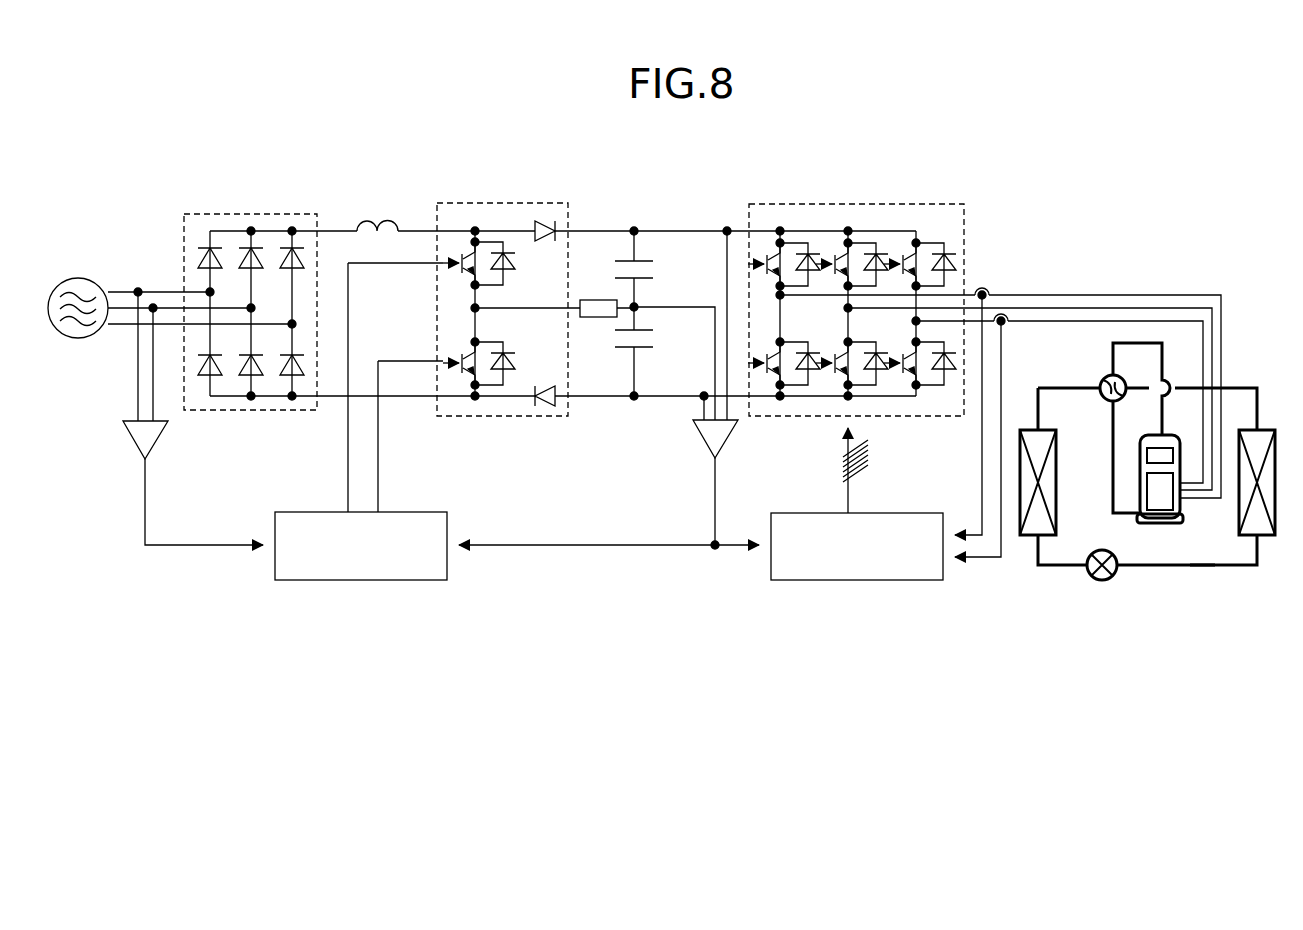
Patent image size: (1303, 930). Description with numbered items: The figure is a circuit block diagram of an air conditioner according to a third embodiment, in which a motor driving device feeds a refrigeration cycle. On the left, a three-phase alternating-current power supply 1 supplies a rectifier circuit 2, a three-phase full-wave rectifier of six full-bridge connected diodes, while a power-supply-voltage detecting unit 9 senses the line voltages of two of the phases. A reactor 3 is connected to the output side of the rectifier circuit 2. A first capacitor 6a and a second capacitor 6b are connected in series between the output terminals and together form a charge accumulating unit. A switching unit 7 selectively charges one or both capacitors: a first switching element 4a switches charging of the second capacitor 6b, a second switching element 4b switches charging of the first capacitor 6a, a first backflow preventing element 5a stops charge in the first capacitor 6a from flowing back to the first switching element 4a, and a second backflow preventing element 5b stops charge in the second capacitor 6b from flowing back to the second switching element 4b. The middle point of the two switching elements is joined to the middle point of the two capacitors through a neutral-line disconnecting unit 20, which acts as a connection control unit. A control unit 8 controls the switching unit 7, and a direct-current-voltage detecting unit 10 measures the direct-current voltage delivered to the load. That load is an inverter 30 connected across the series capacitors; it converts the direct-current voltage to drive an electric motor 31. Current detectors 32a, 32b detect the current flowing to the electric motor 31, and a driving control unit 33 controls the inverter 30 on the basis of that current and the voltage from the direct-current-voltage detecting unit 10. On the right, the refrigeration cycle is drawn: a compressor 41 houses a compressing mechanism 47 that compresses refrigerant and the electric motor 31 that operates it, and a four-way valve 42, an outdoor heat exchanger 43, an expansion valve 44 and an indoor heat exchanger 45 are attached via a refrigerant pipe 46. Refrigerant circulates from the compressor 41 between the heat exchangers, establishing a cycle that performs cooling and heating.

The alternating-current power supply 1 is at (82, 277).
The rectifier circuit 2 is at (283, 213).
The reactor 3 is at (375, 218).
The first switching element 4a is at (460, 269).
The second switching element 4b is at (460, 355).
The first backflow preventing element 5a is at (552, 221).
The second backflow preventing element 5b is at (544, 407).
The first capacitor 6a is at (648, 281).
The second capacitor 6b is at (644, 348).
The switching unit 7 is at (480, 308).
The control unit 8 is at (365, 582).
The power-supply-voltage detecting unit 9 is at (130, 436).
The direct-current-voltage detecting unit 10 is at (730, 440).
The neutral-line disconnecting unit 20 is at (599, 298).
The inverter 30 is at (889, 202).
The electric motor 31 is at (1158, 505).
The current detector 32a is at (982, 288).
The current detector 32b is at (1002, 326).
The driving control unit 33 is at (859, 582).
The compressor 41 is at (1175, 481).
The four-way valve 42 is at (1100, 398).
The outdoor heat exchanger 43 is at (1027, 546).
The expansion valve 44 is at (1100, 580).
The indoor heat exchanger 45 is at (1260, 429).
The refrigerant pipe 46 is at (1173, 567).
The compressing mechanism 47 is at (1150, 454).